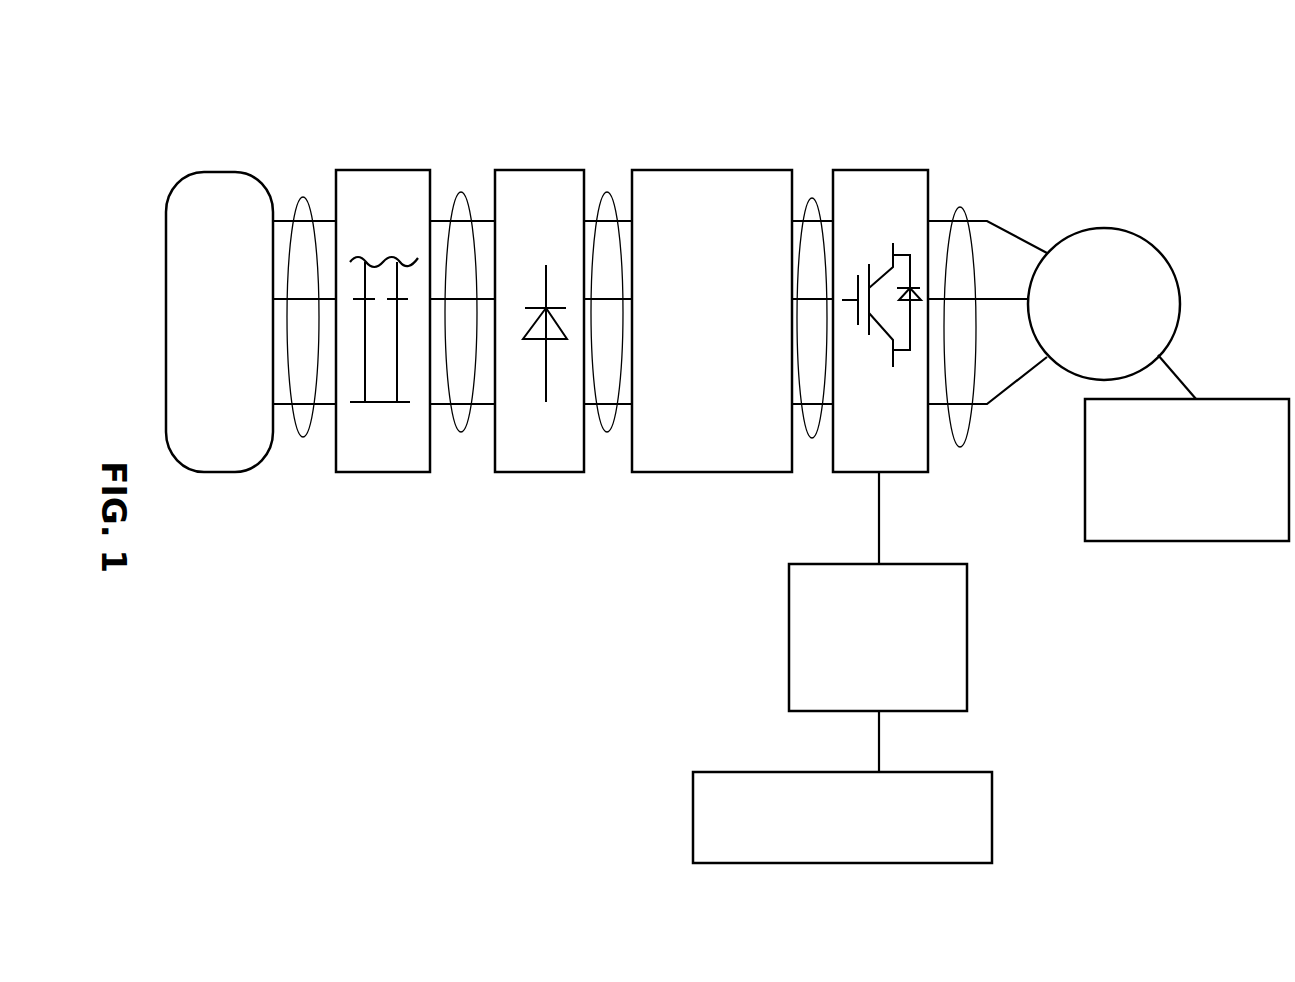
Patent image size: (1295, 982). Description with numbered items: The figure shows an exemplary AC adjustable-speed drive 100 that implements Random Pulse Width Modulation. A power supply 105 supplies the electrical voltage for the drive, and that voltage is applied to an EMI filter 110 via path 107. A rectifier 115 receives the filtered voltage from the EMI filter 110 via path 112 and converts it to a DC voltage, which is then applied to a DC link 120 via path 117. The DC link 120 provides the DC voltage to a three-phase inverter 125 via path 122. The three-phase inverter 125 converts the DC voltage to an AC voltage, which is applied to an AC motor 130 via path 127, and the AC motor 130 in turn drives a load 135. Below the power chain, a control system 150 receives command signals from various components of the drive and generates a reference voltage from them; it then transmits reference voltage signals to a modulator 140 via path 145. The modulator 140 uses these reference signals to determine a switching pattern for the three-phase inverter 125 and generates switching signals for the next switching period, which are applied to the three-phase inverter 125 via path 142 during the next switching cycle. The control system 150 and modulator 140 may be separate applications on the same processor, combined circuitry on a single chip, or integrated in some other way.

The AC adjustable-speed drive 100 is at (1147, 116).
The power supply 105 is at (212, 170).
The path 107 is at (302, 197).
The EMI filter 110 is at (372, 168).
The path 112 is at (462, 192).
The rectifier 115 is at (515, 168).
The path 117 is at (607, 192).
The DC link 120 is at (697, 168).
The path 122 is at (813, 200).
The three-phase inverter 125 is at (862, 168).
The path 127 is at (963, 212).
The AC motor 130 is at (1093, 227).
The load 135 is at (1154, 542).
The modulator 140 is at (967, 653).
The path 142 is at (879, 535).
The path 145 is at (879, 748).
The control system 150 is at (992, 827).